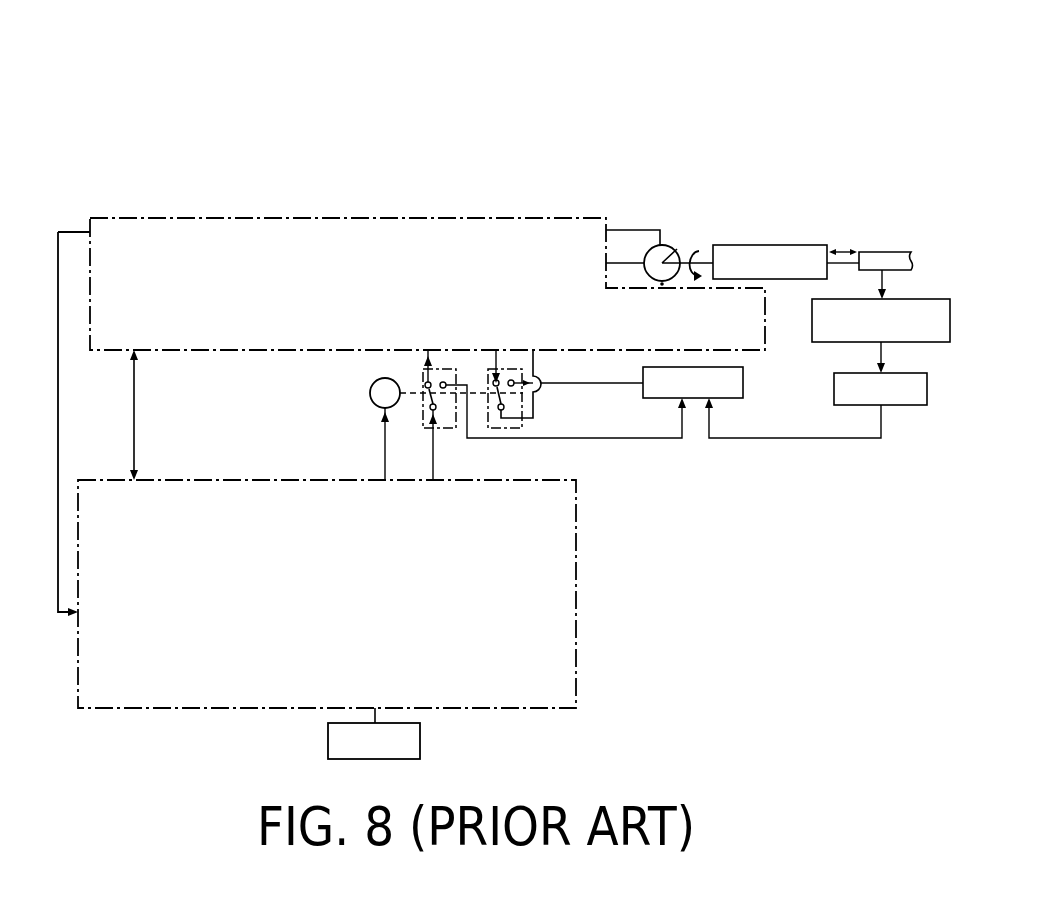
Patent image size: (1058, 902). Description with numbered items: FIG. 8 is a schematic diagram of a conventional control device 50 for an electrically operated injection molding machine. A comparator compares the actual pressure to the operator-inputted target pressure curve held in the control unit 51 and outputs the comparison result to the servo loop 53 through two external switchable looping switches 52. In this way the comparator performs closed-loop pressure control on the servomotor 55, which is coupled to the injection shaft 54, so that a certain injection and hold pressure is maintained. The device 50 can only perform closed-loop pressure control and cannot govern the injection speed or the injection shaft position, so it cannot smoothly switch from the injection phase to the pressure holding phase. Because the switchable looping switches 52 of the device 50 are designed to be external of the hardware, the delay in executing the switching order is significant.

The device 50 is at (790, 156).
The control unit 51 is at (568, 592).
The switchable looping switches 52 is at (507, 372).
The servo loop 53 is at (257, 246).
The injection shaft 54 is at (874, 260).
The servomotor 55 is at (669, 256).